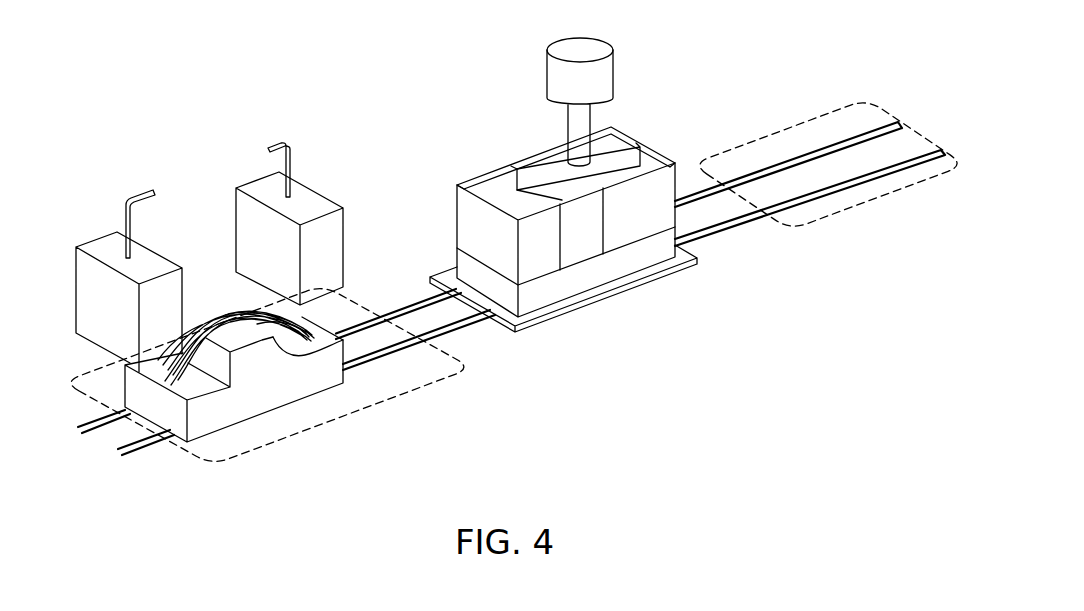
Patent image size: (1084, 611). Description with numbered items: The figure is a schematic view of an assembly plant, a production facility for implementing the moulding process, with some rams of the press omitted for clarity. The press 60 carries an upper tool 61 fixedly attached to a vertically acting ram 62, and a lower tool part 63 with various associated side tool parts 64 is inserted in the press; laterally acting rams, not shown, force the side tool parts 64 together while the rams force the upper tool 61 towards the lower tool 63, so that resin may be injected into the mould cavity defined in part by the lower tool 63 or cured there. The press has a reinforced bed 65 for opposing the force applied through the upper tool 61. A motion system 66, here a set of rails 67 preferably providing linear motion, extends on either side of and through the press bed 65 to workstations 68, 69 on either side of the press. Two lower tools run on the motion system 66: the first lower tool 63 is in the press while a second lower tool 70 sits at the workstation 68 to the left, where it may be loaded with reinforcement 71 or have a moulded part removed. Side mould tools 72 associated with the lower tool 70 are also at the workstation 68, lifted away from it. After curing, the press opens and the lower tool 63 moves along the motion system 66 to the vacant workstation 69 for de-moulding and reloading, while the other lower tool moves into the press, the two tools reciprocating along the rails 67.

The press 60 is at (580, 210).
The upper tool 61 is at (515, 166).
The vertically acting ram 62 is at (594, 117).
The lower tool part 63 is at (572, 287).
The side tool parts 64 is at (647, 147).
The reinforced bed 65 is at (520, 330).
The motion system 66 is at (511, 270).
The rails 67 is at (373, 362).
The workstation 68 is at (228, 448).
The workstation 69 is at (898, 187).
The lower tool 70 is at (212, 415).
The reinforcement 71 is at (213, 317).
The side mould tools 72 is at (93, 240).